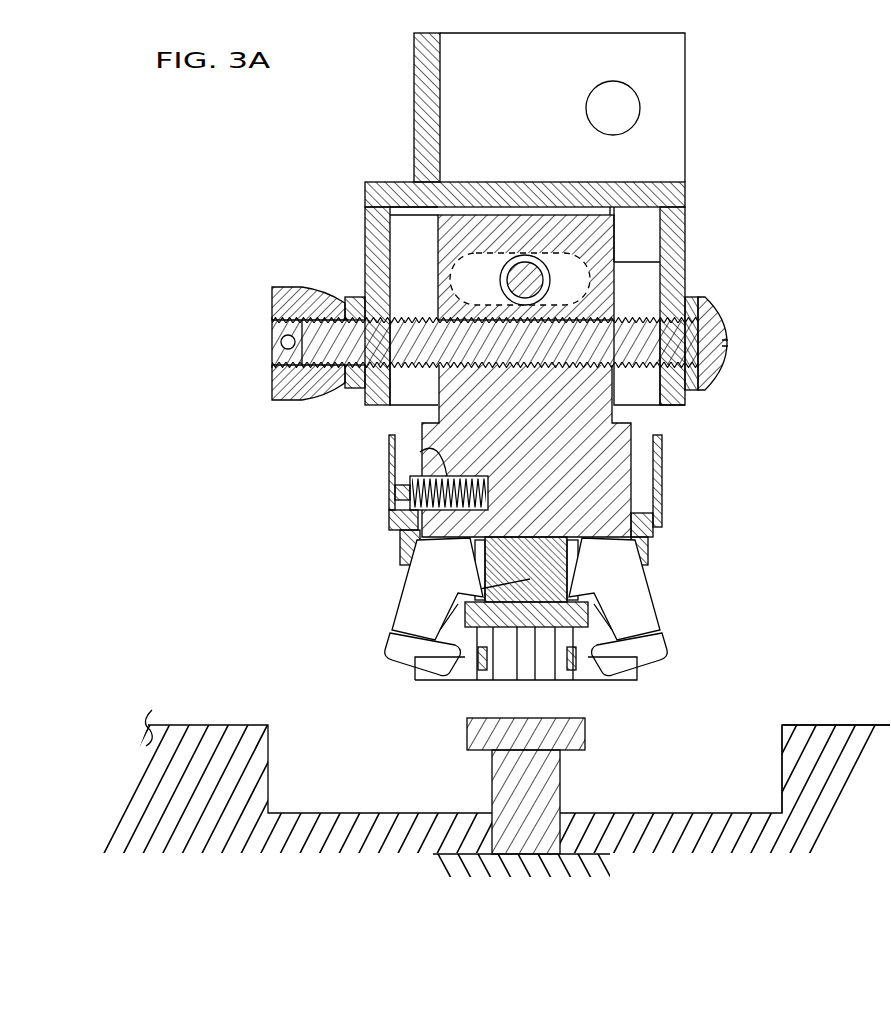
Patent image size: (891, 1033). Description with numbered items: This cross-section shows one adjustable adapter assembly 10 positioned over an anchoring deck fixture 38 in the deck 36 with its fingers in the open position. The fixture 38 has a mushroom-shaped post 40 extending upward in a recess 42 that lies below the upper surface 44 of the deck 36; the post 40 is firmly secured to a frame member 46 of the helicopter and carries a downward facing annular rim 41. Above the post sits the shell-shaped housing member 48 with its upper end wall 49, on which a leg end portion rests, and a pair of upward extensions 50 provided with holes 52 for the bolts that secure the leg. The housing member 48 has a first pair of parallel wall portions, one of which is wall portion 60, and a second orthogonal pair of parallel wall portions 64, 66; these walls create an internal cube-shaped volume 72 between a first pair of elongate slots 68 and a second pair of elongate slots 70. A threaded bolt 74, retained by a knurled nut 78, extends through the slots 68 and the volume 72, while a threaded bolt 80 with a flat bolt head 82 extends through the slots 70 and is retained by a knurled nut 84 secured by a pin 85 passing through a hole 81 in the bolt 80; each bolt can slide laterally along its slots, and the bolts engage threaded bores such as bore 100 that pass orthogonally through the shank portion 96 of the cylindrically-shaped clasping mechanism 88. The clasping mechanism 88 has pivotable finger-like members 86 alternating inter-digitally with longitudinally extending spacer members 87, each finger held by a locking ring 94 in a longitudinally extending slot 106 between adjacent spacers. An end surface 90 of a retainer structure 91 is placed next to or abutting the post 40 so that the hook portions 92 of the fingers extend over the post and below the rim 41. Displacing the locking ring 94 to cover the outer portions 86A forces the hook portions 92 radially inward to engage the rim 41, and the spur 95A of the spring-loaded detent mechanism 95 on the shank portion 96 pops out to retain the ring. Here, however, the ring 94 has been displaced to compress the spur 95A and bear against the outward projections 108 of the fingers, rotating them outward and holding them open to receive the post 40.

The adjustable adapter assembly 10 is at (771, 138).
The deck 36 is at (851, 780).
The anchoring deck fixture 38 is at (793, 682).
The mushroom-shaped post 40 is at (470, 718).
The annular rim 41 is at (492, 752).
The recess 42 is at (758, 756).
The upper surface 44 is at (830, 725).
The frame member 46 is at (612, 858).
The housing member 48 is at (685, 190).
The upper end wall 49 is at (520, 182).
The upward extension 50 is at (414, 66).
The hole 52 is at (640, 118).
The wall portion 60 is at (651, 250).
The wall portion 64 is at (668, 222).
The wall portion 66 is at (383, 233).
The elongate slot 68 is at (620, 291).
The elongate slot 70 is at (350, 318).
The internal cube-shaped volume 72 is at (407, 215).
The threaded bolt 74 is at (525, 282).
The knurled nut 78 is at (615, 202).
The threaded bolt 80 is at (630, 345).
The hole 81 is at (285, 337).
The flat bolt head 82 is at (727, 371).
The knurled nut 84 is at (272, 295).
The pin 85 is at (281, 344).
The finger-like member 86 is at (442, 593).
The outer portion 86A is at (612, 593).
The spacer member 87 is at (440, 671).
The clasping mechanism 88 is at (692, 548).
The end surface 90 is at (526, 628).
The retainer structure 91 is at (430, 553).
The hook portion 92 is at (476, 648).
The locking ring 94 is at (389, 498).
The spring-loaded detent mechanism 95 is at (420, 452).
The spur 95A is at (408, 480).
The shank portion 96 is at (660, 262).
The threaded bore 100 is at (447, 335).
The longitudinally extending slot 106 is at (445, 624).
The outward projection 108 is at (400, 535).